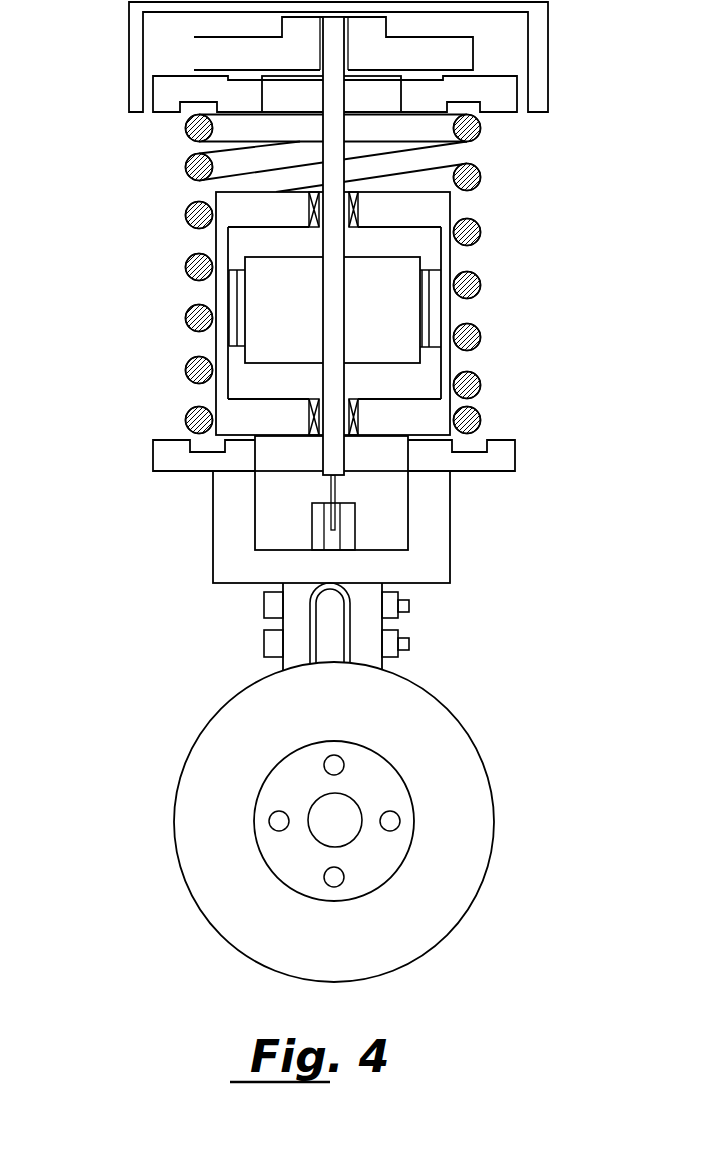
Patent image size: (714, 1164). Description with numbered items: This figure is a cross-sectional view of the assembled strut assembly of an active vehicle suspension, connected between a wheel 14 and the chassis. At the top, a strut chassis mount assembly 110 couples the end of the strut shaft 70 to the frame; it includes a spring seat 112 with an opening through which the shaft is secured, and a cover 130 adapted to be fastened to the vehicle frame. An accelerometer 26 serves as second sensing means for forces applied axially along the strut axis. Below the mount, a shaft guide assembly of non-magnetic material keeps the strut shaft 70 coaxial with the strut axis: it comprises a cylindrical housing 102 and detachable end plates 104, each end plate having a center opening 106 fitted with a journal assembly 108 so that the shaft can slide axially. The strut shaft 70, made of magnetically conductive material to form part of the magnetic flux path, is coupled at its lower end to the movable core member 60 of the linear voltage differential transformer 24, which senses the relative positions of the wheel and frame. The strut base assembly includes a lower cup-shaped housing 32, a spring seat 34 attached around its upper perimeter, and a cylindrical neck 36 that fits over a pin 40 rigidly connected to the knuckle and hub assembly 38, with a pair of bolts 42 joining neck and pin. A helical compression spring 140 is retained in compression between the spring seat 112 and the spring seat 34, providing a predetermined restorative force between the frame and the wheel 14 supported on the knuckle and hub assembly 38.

The wheel 14 is at (453, 710).
The linear voltage differential transformer 24 is at (313, 524).
The accelerometer 26 is at (282, 23).
The lower cup-shaped housing 32 is at (453, 533).
The spring seat 34 is at (515, 462).
The cylindrical neck 36 is at (383, 624).
The knuckle and hub assembly 38 is at (265, 788).
The pin 40 is at (327, 627).
The bolts 42 is at (264, 636).
The movable core member 60 is at (327, 486).
The strut shaft 70 is at (330, 290).
The cylindrical housing 102 is at (445, 262).
The end plates 104 is at (445, 213).
The center opening 106 is at (315, 205).
The journal assembly 108 is at (322, 208).
The strut chassis mount assembly 110 is at (316, 71).
The spring seat 112 is at (508, 115).
The cover 130 is at (550, 33).
The helical compression spring 140 is at (474, 338).